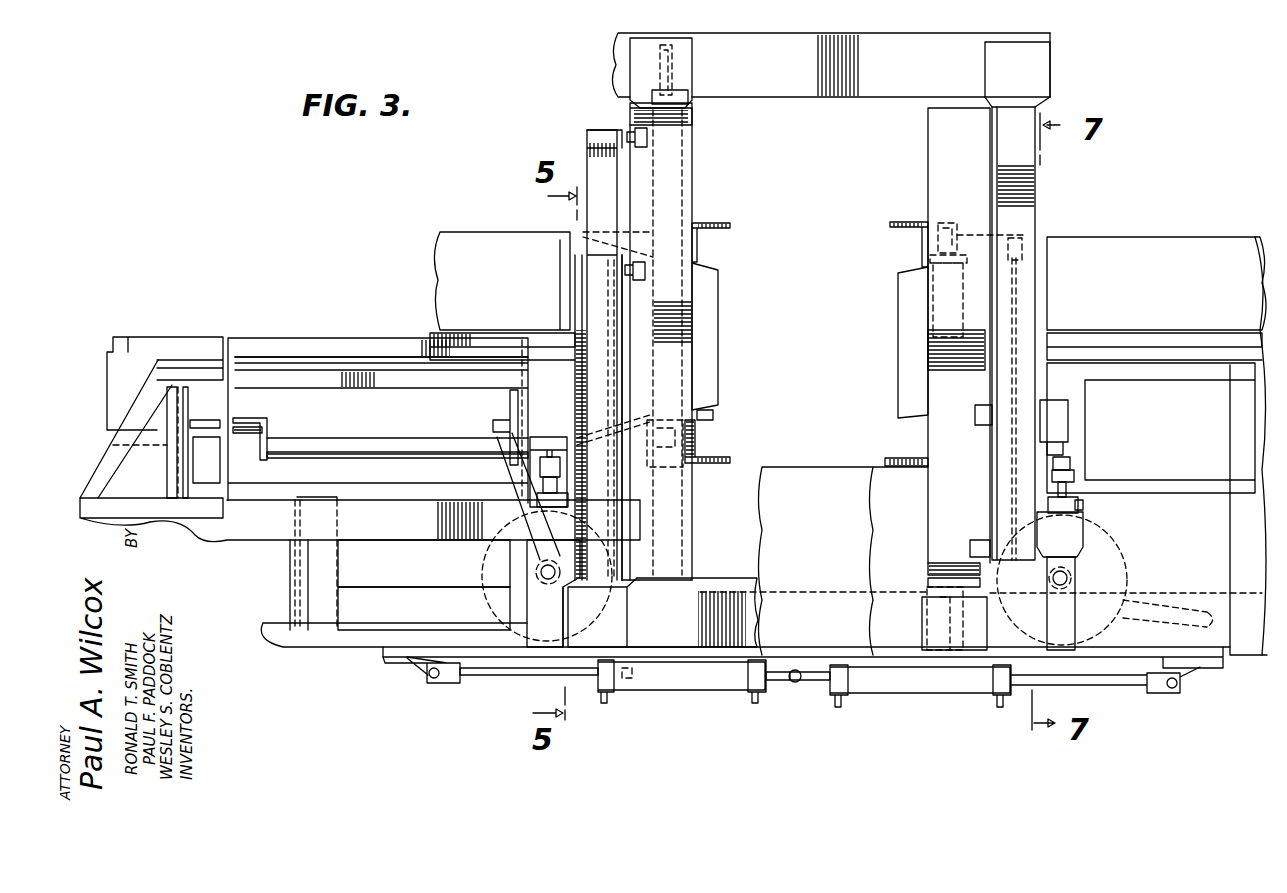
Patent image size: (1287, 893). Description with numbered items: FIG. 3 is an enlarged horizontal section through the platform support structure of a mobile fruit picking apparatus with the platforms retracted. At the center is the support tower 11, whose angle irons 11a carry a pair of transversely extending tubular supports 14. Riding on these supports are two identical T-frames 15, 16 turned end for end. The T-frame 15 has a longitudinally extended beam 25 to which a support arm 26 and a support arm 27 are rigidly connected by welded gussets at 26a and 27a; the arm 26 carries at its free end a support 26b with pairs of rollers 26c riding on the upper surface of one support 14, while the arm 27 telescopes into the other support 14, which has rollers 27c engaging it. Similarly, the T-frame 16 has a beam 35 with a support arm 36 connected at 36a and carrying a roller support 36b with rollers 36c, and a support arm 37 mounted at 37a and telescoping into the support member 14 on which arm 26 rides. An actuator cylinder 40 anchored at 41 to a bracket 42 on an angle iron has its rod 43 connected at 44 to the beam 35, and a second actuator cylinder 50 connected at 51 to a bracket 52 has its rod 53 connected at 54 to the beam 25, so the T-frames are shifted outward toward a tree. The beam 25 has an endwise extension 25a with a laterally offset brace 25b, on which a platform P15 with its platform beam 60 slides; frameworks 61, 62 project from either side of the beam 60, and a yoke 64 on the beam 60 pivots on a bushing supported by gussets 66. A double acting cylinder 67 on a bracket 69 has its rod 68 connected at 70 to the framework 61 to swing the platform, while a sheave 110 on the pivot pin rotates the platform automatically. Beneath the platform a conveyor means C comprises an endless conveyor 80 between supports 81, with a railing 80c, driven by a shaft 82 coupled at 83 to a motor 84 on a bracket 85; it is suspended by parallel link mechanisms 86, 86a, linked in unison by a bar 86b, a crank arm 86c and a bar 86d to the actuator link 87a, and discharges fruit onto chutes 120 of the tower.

The tower 11 is at (876, 219).
The angle irons 11a is at (907, 462).
The tubular supports 14 is at (680, 537).
The T-frame 15 is at (729, 654).
The T-frame 16 is at (945, 29).
The beam 25 is at (698, 600).
The endwise extension 25a is at (424, 608).
The brace 25b is at (330, 572).
The support arm 26 is at (590, 213).
The gusset connection 26a is at (628, 630).
The support 26b is at (590, 139).
The rollers 26c is at (645, 270).
The support arm 27 is at (982, 612).
The gusset connection 27a is at (924, 630).
The rollers 27c is at (935, 568).
The beam 35 is at (840, 42).
The support arm 36 is at (1037, 200).
The connection 36a is at (970, 548).
The roller support 36b is at (1070, 443).
The rollers 36c is at (973, 412).
The support arm 37 is at (630, 105).
The mounting 37a is at (640, 78).
The actuator cylinder 40 is at (695, 167).
The anchor 41 is at (668, 423).
The bracket 42 is at (706, 465).
The rod 43 is at (683, 90).
The connection 44 is at (677, 62).
The actuator cylinder 50 is at (926, 330).
The connection 51 is at (950, 245).
The bracket 52 is at (900, 222).
The rod 53 is at (927, 600).
The connection 54 is at (955, 642).
The platform beam 60 is at (360, 520).
The framework 61 is at (353, 648).
The framework 62 is at (405, 385).
The yoke 64 is at (1075, 560).
The gussets 66 is at (1068, 619).
The cylinder 67 is at (661, 692).
The rod 68 is at (480, 676).
The bracket 69 is at (795, 683).
The connection 70 is at (428, 676).
The endless conveyor 80 is at (1215, 372).
The railing 80c is at (253, 360).
The supports 81 is at (1172, 340).
The driven shaft 82 is at (1062, 456).
The coupling 83 is at (1075, 477).
The motor 84 is at (1082, 504).
The bracket 85 is at (558, 482).
The parallel link mechanism 86 is at (492, 404).
The parallel linkage means 86a is at (205, 408).
The bar 86b is at (333, 452).
The crank arm 86c is at (266, 447).
The bar 86d is at (243, 436).
The actuator link 87a is at (200, 540).
The sheave 110 is at (1126, 563).
The chutes 120 is at (907, 298).
The platform P15 is at (278, 548).
The conveyor means C is at (1225, 229).